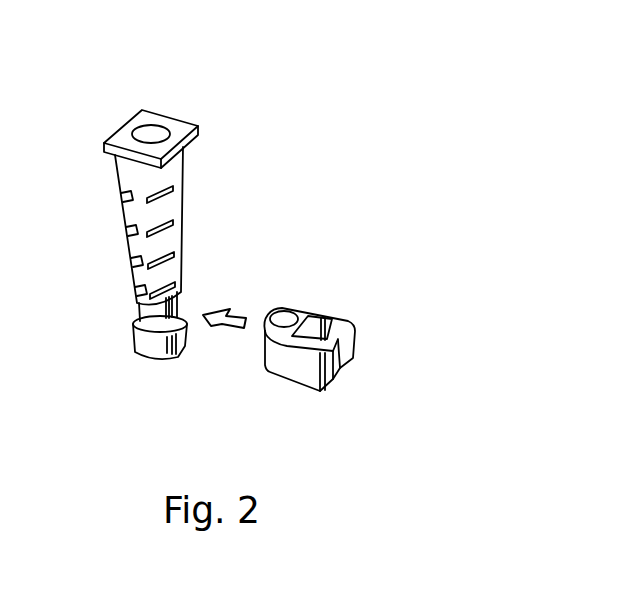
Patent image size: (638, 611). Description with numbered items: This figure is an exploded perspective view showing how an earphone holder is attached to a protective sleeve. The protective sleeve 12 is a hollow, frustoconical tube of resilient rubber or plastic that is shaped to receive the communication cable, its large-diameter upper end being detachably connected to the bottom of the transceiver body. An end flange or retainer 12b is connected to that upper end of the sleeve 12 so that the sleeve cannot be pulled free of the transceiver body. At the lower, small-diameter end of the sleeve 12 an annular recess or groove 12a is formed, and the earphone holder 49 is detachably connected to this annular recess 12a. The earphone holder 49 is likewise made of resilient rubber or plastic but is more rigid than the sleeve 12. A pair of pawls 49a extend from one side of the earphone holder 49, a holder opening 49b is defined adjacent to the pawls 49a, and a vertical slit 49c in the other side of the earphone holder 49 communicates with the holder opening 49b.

The protective sleeve 12 is at (122, 205).
The annular recess 12a is at (137, 311).
The end flange 12b is at (142, 110).
The earphone holder 49 is at (283, 378).
The pawls 49a is at (288, 307).
The holder opening 49b is at (332, 320).
The vertical slit 49c is at (343, 355).